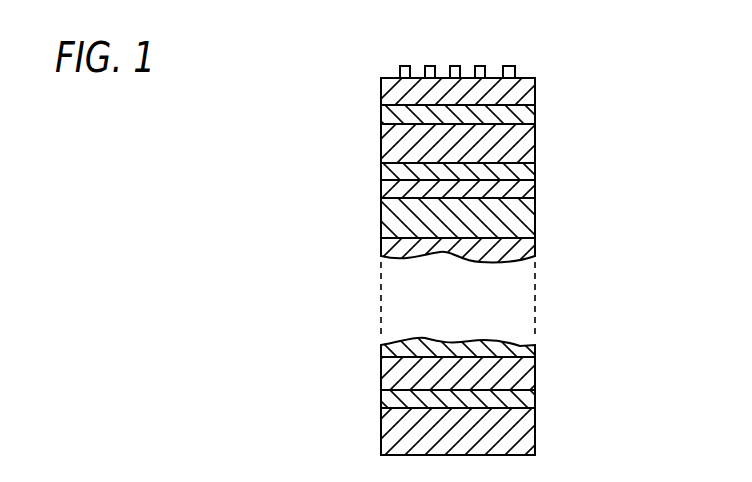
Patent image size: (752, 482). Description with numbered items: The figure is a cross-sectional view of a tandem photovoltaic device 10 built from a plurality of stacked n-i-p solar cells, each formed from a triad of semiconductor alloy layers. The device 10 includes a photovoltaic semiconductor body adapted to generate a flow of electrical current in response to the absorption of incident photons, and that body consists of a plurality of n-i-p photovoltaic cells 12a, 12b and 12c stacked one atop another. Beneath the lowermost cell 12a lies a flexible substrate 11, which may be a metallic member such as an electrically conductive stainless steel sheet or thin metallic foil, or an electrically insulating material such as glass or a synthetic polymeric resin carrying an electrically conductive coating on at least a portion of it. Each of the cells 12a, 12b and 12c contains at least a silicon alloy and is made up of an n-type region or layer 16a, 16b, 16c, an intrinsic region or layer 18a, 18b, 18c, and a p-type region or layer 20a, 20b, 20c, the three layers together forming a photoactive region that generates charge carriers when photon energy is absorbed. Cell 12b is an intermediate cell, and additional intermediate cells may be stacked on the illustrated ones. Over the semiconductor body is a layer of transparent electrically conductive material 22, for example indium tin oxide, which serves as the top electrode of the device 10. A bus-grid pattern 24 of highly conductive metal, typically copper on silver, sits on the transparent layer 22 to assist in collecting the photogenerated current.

The tandem photovoltaic device 10 is at (572, 65).
The flexible substrate 11 is at (402, 432).
The n-i-p photovoltaic cell 12a is at (380, 345).
The n-i-p photovoltaic cell 12b is at (380, 180).
The n-i-p photovoltaic cell 12c is at (380, 105).
The n-type layer 16a is at (535, 398).
The n-type layer 16b is at (535, 255).
The n-type layer 16c is at (535, 173).
The intrinsic layer 18a is at (535, 372).
The intrinsic layer 18b is at (535, 224).
The intrinsic layer 18c is at (535, 146).
The p-type layer 20a is at (535, 348).
The p-type layer 20b is at (535, 190).
The p-type layer 20c is at (535, 118).
The transparent electrically conductive layer 22 is at (535, 95).
The bus-grid pattern 24 is at (512, 66).